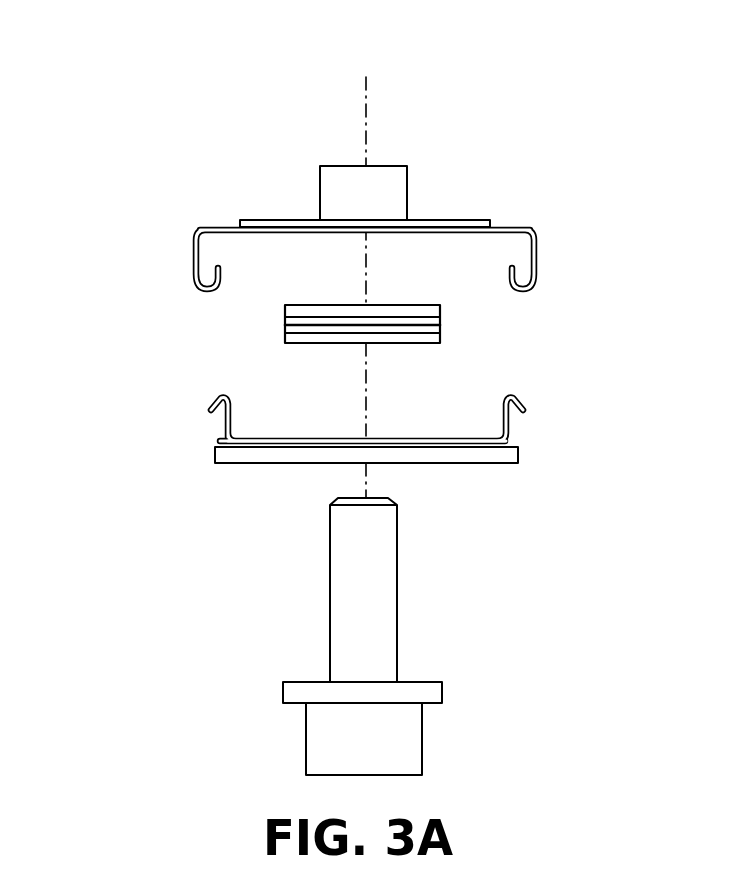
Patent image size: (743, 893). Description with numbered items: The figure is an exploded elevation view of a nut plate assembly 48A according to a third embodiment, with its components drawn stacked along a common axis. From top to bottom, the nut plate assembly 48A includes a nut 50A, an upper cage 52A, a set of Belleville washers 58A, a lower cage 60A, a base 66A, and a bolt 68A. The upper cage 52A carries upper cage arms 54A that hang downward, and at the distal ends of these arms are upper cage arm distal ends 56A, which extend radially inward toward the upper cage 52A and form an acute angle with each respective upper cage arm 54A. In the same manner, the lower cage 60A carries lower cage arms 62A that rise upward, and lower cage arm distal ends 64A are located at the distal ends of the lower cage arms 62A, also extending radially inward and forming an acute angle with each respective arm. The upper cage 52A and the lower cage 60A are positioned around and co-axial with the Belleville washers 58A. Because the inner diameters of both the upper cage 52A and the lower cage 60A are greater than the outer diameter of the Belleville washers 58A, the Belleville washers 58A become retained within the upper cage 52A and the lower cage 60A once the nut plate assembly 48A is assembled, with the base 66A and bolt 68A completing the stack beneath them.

The nut plate assembly 48A is at (249, 138).
The nut 50A is at (459, 217).
The upper cage 52A is at (563, 277).
The upper cage arms 54A is at (192, 250).
The upper cage arm distal ends 56A is at (507, 276).
The Belleville washers 58A is at (444, 325).
The lower cage 60A is at (206, 432).
The lower cage arms 62A is at (516, 427).
The lower cage arm distal ends 64A is at (206, 407).
The base 66A is at (463, 466).
The bolt 68A is at (400, 613).